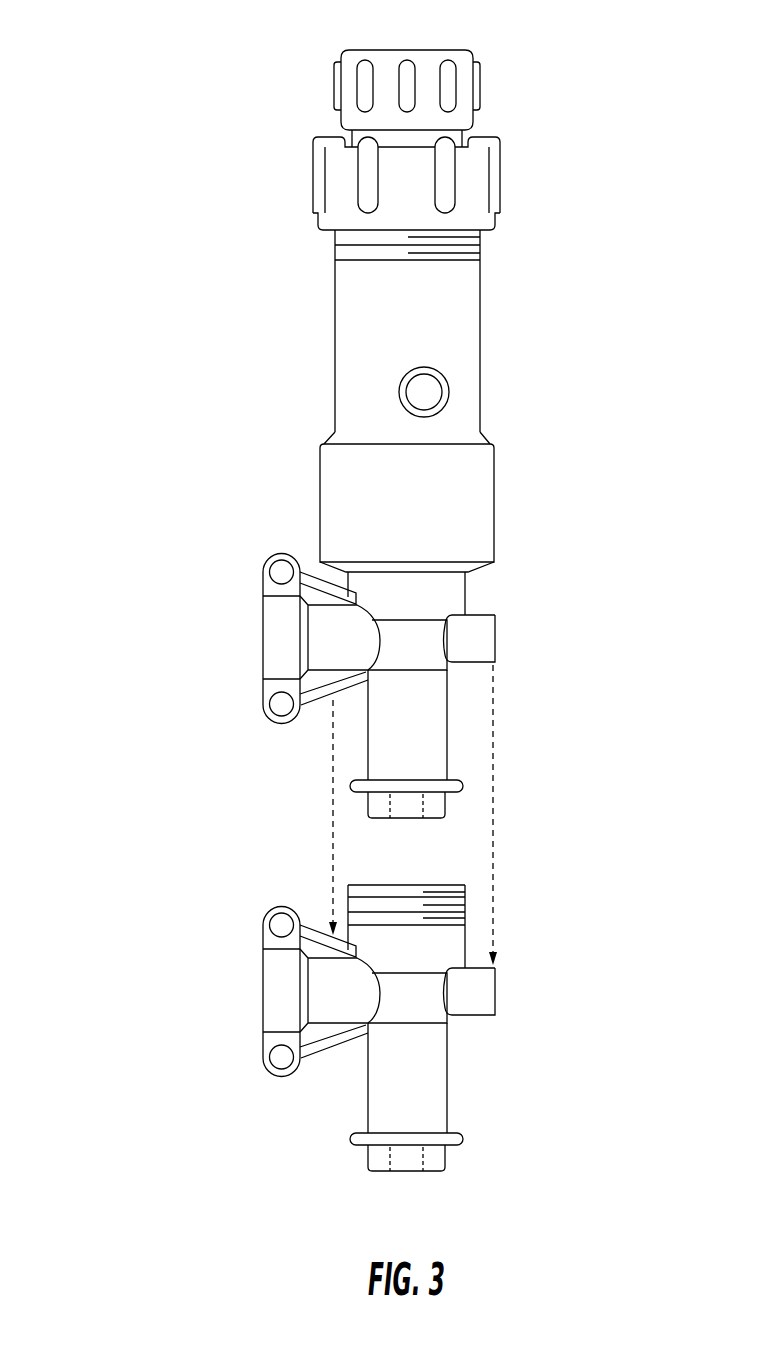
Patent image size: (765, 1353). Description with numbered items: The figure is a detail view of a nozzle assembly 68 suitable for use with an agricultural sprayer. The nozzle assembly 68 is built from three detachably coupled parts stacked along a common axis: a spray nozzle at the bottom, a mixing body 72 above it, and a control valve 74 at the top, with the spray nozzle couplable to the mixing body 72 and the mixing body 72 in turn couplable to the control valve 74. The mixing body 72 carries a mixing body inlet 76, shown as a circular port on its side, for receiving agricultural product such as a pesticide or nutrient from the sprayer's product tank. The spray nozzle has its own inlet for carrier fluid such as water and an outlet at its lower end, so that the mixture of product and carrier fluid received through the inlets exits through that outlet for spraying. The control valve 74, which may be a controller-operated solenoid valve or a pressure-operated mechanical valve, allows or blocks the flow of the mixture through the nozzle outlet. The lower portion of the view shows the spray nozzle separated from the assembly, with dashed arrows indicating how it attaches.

The nozzle assembly 68 is at (113, 216).
The mixing body 72 is at (348, 403).
The control valve 74 is at (387, 65).
The mixing body inlet 76 is at (442, 390).